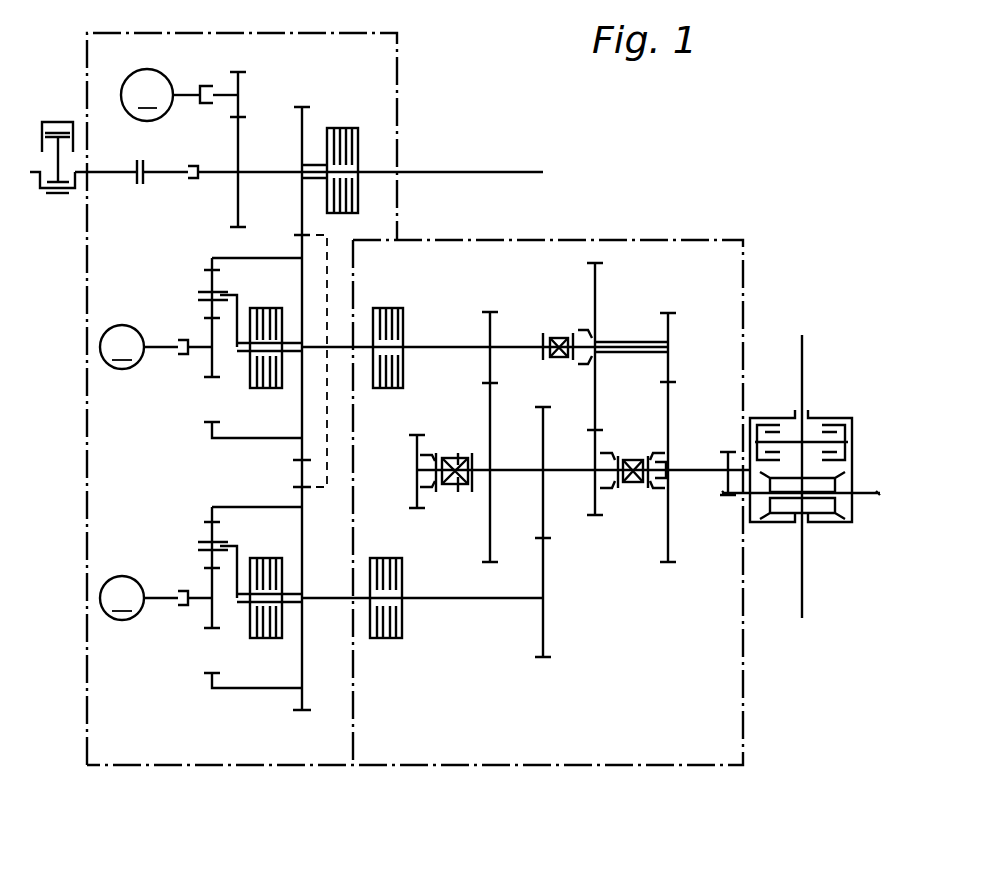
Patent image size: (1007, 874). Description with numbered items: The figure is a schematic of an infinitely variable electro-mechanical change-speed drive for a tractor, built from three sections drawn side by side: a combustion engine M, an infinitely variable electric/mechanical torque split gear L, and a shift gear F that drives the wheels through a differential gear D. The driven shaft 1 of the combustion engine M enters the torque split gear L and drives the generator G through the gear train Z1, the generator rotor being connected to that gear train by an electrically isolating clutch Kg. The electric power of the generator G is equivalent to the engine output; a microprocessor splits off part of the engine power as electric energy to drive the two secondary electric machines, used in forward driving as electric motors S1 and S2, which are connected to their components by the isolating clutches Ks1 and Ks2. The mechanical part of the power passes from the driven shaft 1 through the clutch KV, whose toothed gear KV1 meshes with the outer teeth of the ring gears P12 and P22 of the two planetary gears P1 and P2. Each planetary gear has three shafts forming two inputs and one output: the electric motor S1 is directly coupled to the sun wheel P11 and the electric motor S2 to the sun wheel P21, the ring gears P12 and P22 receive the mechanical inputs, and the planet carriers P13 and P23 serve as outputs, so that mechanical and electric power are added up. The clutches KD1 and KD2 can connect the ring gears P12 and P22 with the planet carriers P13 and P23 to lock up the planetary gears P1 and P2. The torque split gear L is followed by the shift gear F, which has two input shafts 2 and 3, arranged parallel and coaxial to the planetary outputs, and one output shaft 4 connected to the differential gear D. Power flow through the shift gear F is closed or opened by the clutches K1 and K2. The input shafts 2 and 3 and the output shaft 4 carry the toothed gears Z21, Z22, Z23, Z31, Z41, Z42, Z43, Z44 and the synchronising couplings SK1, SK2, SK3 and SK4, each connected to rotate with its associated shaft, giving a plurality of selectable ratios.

The combustion engine M is at (48, 121).
The driven shaft 1 is at (165, 174).
The generator G is at (160, 95).
The generator clutch Kg is at (207, 86).
The gear train Z1 is at (247, 110).
The toothed gear KV1 is at (306, 120).
The clutch KV is at (360, 146).
The torque split gear L is at (398, 68).
The first planetary gear P1 is at (265, 253).
The first electric motor S1 is at (139, 347).
The first motor clutch Ks1 is at (186, 345).
The sun wheel of first planetary gear P11 is at (207, 370).
The ring gear of first planetary gear P12 is at (212, 440).
The planet carrier of first planetary gear P13 is at (240, 305).
The first lock-up clutch KD1 is at (264, 392).
The second planetary gear P2 is at (309, 674).
The second electric motor S2 is at (139, 598).
The second motor clutch Ks2 is at (186, 595).
The sun wheel of second planetary gear P21 is at (207, 618).
The ring gear of second planetary gear P22 is at (212, 690).
The planet carrier of second planetary gear P23 is at (240, 556).
The second lock-up clutch KD2 is at (264, 642).
The shift gear F is at (693, 238).
The first input shaft 2 is at (452, 345).
The first clutch K1 is at (383, 307).
The toothed gear Z21 is at (493, 335).
The first synchronising coupling SK1 is at (580, 338).
The toothed gear Z22 is at (597, 300).
The toothed gear Z23 is at (668, 330).
The second input shaft 3 is at (473, 600).
The second clutch K2 is at (380, 557).
The toothed gear Z31 is at (546, 653).
The output shaft 4 is at (697, 467).
The toothed gear Z41 is at (488, 530).
The toothed gear Z42 is at (543, 406).
The toothed gear Z43 is at (598, 518).
The toothed gear Z44 is at (671, 565).
The second synchronising coupling SK2 is at (436, 462).
The third synchronising coupling SK3 is at (612, 455).
The fourth synchronising coupling SK4 is at (668, 483).
The differential gear D is at (832, 414).